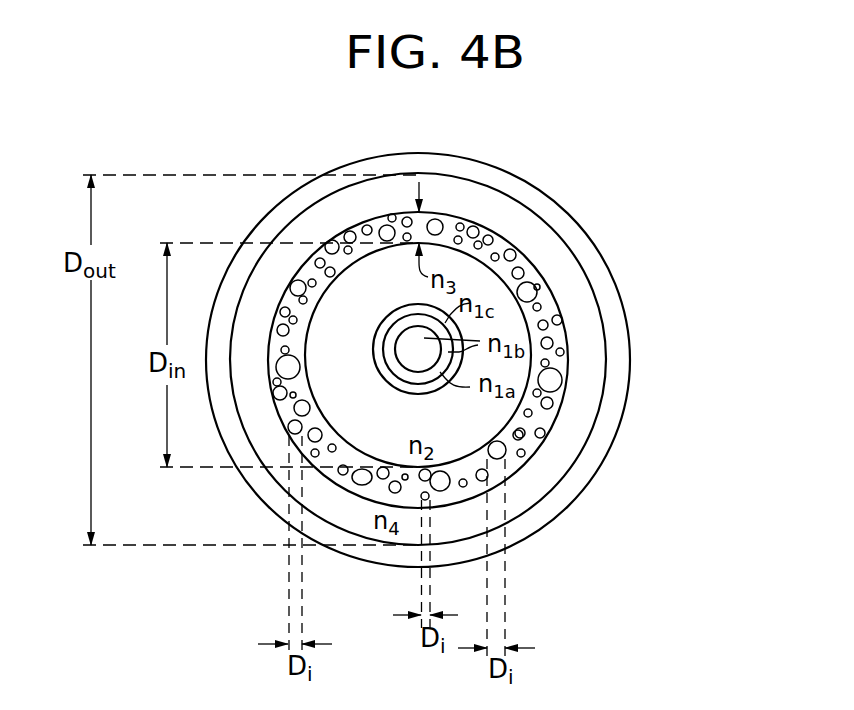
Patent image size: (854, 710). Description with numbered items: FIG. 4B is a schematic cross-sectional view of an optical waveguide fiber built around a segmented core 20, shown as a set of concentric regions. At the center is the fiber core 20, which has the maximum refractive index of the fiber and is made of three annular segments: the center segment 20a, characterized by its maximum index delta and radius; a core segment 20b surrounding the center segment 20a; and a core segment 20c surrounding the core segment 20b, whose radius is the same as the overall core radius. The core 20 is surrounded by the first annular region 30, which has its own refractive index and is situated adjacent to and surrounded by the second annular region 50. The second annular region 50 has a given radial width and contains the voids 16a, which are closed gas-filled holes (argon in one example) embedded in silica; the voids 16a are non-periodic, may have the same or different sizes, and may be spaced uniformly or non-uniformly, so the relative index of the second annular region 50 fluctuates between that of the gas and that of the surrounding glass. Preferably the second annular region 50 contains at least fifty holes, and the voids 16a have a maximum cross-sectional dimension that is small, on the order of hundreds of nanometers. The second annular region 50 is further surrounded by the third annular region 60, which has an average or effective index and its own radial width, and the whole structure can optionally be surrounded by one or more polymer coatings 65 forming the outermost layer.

The voids 16a is at (532, 268).
The fiber core 20 is at (500, 345).
The center segment 20a is at (412, 360).
The core segment 20b is at (387, 352).
The core segment 20c is at (396, 322).
The first annular region 30 is at (500, 368).
The second annular region 50 is at (498, 342).
The third annular region 60 is at (543, 482).
The polymer coatings 65 is at (533, 526).